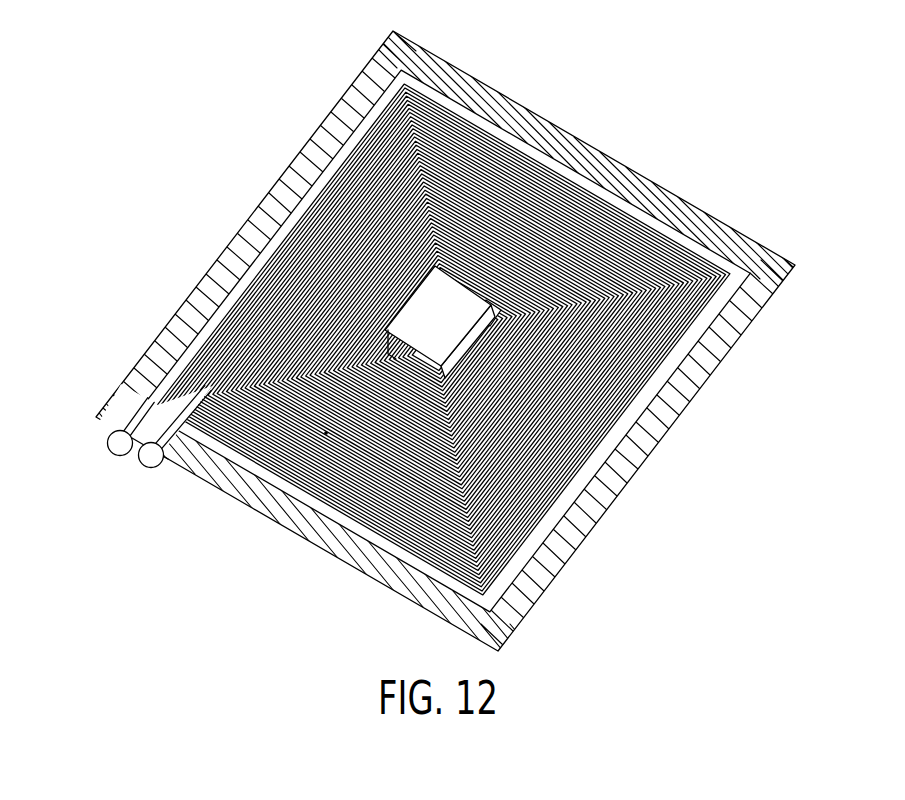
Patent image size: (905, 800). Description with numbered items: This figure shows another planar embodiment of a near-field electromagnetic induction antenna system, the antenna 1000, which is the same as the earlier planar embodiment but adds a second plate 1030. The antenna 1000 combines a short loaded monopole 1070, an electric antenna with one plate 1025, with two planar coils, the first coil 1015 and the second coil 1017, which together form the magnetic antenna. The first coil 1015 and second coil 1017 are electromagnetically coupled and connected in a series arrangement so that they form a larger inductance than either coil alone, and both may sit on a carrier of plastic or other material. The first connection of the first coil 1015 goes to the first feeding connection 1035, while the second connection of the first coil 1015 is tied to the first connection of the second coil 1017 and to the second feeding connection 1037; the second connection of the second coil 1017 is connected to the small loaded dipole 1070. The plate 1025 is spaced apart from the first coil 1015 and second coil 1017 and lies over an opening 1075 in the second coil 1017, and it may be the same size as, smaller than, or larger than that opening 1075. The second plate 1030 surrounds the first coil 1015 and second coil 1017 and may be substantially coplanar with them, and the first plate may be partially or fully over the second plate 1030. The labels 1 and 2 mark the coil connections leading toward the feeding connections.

The antenna 1000 is at (226, 145).
The second plate 1030 is at (665, 173).
The first coil 1015 is at (237, 283).
The plate 1025 is at (566, 425).
The first coil terminal lead 1 is at (175, 585).
The second coil terminal lead 2 is at (378, 346).
The first feeding connection 1035 is at (101, 445).
The second feeding connection 1037 is at (146, 461).
The second coil 1017 is at (318, 425).
The opening 1075 is at (445, 318).
The short loaded monopole 1070 is at (445, 318).